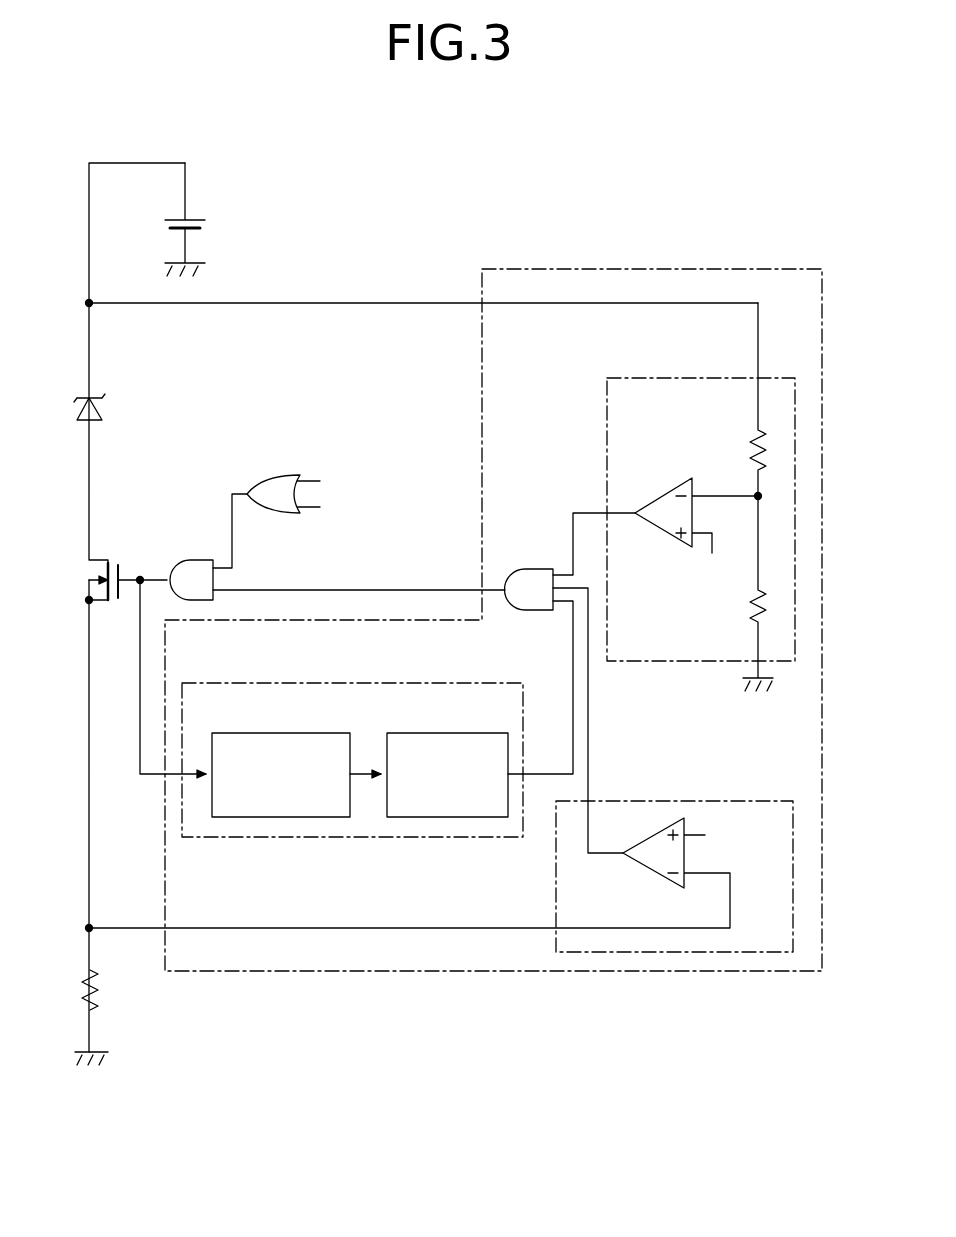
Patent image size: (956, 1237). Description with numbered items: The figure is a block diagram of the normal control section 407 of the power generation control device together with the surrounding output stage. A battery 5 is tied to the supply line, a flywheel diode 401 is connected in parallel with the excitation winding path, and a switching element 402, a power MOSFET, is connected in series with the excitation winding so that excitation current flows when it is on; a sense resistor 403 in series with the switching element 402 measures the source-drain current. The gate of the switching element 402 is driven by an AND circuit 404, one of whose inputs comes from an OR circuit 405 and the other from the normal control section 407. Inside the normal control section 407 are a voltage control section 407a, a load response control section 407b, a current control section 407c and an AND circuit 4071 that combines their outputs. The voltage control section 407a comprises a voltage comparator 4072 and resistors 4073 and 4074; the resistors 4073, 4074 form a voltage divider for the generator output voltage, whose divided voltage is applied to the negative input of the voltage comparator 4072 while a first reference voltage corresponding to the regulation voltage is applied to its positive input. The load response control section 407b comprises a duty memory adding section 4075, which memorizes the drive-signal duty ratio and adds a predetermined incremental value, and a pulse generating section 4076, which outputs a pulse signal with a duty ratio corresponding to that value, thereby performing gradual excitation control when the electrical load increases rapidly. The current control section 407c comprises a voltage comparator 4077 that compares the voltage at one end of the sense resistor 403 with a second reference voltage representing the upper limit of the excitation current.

The battery 5 is at (195, 219).
The flywheel diode 401 is at (98, 397).
The switching element 402 is at (96, 560).
The sense resistor 403 is at (132, 990).
The AND circuit 404 is at (196, 560).
The OR circuit 405 is at (276, 475).
The normal control section 407 is at (787, 268).
The voltage control section 407a is at (610, 378).
The load response control section 407b is at (455, 683).
The current control section 407c is at (763, 801).
The AND circuit 4071 is at (533, 569).
The voltage comparator 4072 is at (660, 500).
The resistor 4073 is at (750, 440).
The resistor 4074 is at (750, 606).
The duty memory adding section 4075 is at (283, 733).
The pulse generating section 4076 is at (449, 733).
The voltage comparator 4077 is at (646, 878).